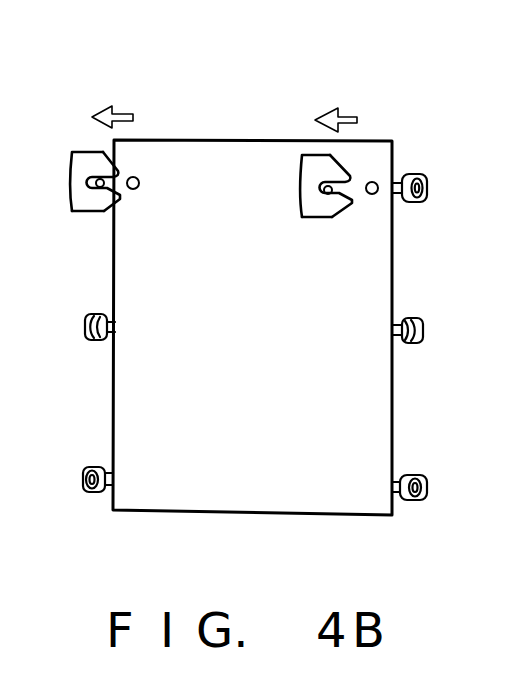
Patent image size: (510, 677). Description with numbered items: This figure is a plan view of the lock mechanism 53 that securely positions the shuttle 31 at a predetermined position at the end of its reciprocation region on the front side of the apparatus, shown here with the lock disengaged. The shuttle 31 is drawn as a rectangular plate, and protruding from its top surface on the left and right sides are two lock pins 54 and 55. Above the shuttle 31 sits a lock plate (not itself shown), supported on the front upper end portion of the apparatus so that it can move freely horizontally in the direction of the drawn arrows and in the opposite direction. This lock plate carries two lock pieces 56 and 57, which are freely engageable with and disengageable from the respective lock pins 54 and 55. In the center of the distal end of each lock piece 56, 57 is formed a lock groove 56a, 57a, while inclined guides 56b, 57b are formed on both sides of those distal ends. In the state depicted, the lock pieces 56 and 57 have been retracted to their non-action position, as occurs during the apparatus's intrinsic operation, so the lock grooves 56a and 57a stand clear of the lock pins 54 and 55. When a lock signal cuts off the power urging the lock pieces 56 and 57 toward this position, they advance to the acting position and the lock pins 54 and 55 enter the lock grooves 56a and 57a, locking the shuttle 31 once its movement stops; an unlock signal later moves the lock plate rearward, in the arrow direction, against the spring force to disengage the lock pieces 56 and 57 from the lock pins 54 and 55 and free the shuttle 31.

The shuttle 31 is at (380, 413).
The lock mechanism 53 is at (378, 127).
The lock pin 54 is at (136, 177).
The lock pin 55 is at (375, 182).
The lock piece 56 is at (72, 180).
The lock groove 56a is at (98, 212).
The inclined guide 56b is at (110, 160).
The lock piece 57 is at (302, 182).
The lock groove 57a is at (327, 218).
The inclined guide 57b is at (342, 166).